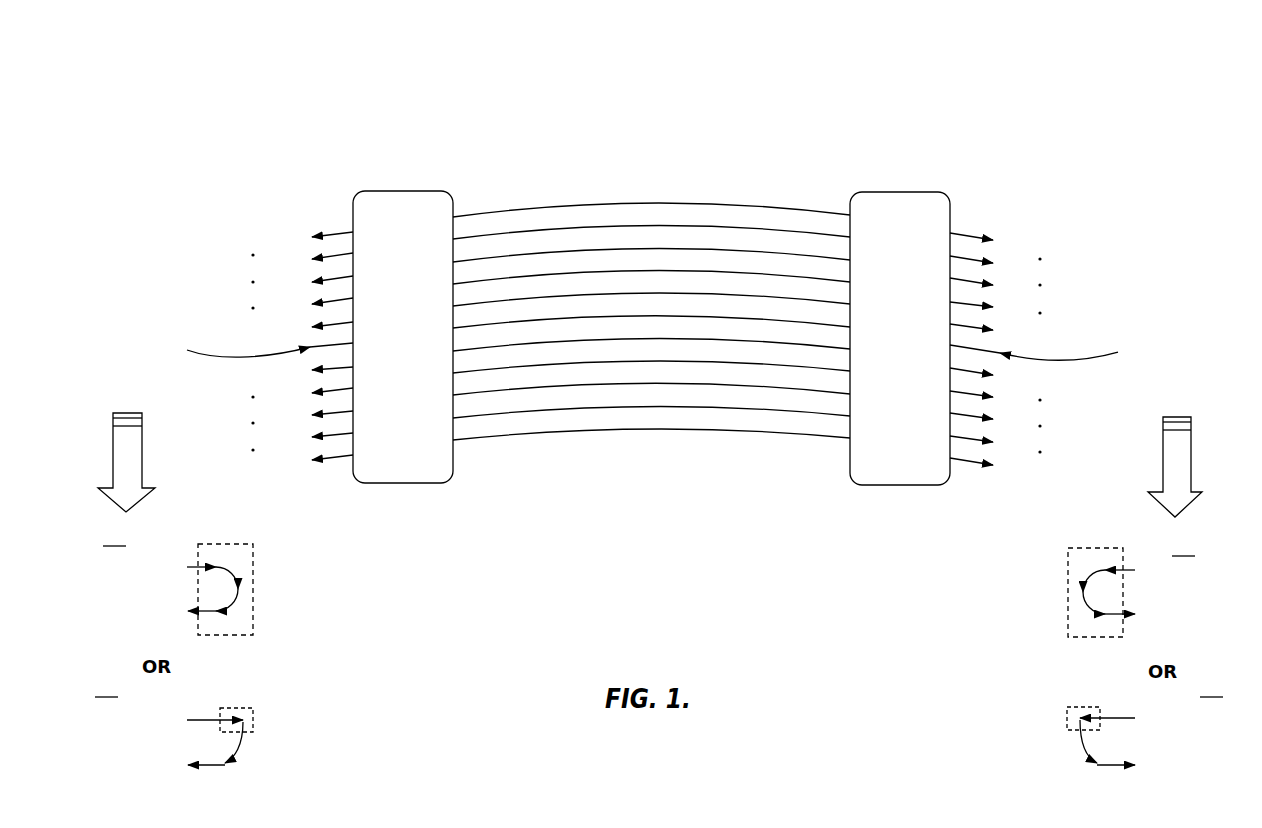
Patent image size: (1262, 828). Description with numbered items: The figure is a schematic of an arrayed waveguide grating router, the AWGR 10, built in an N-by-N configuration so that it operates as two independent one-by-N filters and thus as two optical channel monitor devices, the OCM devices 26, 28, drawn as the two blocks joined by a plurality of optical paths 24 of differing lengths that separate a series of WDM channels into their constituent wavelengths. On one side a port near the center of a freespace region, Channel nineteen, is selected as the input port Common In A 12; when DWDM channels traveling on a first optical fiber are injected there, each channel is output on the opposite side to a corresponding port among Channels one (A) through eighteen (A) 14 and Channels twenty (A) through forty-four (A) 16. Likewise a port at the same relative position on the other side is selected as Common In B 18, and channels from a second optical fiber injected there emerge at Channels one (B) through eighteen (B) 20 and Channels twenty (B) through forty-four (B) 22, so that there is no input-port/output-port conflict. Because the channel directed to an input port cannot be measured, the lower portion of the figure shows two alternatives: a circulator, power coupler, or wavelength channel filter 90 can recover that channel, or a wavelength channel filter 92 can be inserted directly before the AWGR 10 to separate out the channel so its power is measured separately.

The AWGR 10 is at (840, 147).
The OCM device 28 is at (410, 188).
The OCM device 26 is at (906, 193).
The optical paths 24 is at (660, 467).
The Channels 1 (B)-18 (B) 20 is at (293, 290).
The Channels 20 (B)-44 (B) 22 is at (293, 432).
The Channels 1 (A)-18 (A) 14 is at (1026, 294).
The Channels 20 (A)-44 (A) 16 is at (1026, 436).
The Common In A 12 is at (143, 397).
The Common In B 18 is at (1186, 401).
The circulator, power coupler, or wavelength channel filter 90 is at (298, 599).
The wavelength channel filter 92 is at (300, 736).